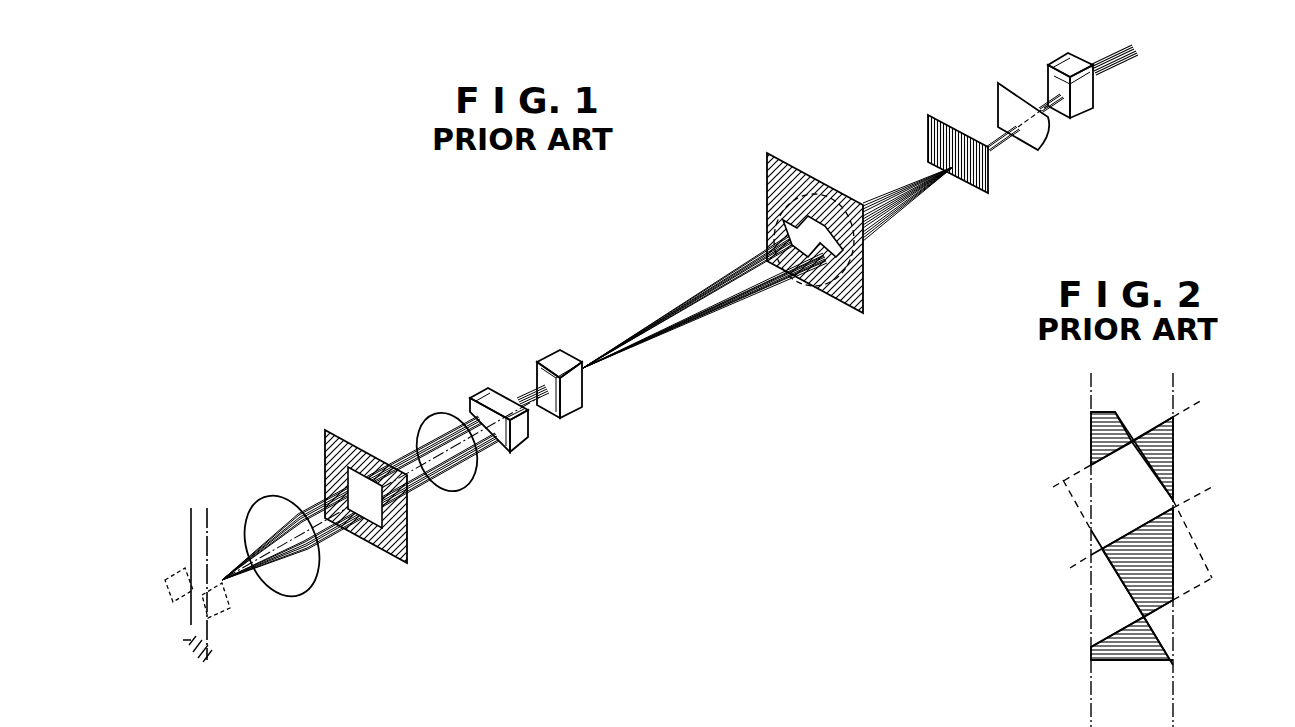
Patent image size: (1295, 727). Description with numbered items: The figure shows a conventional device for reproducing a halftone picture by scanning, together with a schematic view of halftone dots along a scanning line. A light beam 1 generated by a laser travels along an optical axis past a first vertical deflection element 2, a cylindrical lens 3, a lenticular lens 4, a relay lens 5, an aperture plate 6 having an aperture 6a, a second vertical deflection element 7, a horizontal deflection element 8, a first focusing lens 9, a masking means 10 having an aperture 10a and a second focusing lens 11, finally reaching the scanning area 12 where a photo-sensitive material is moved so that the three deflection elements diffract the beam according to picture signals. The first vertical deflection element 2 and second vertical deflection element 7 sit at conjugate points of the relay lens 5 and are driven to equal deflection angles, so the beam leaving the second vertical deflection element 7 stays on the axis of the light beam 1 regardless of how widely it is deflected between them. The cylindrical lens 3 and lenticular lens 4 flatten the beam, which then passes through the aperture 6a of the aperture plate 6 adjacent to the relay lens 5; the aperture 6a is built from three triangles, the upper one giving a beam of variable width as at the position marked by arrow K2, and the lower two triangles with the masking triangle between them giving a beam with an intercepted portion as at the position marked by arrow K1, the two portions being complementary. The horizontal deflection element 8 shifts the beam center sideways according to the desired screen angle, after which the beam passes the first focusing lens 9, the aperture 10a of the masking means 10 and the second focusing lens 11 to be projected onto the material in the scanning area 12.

In FIG. 1, the light beam 1 is at (1110, 62).
In FIG. 1, the first vertical deflection element 2 is at (1088, 113).
In FIG. 1, the cylindrical lens 3 is at (1015, 83).
In FIG. 1, the lenticular lens 4 is at (949, 115).
In FIG. 1, the relay lens 5 is at (832, 292).
In FIG. 1, the aperture plate 6 is at (863, 313).
In FIG. 1, the aperture 6a is at (848, 258).
In FIG. 1, the second vertical deflection element 7 is at (560, 357).
In FIG. 1, the horizontal deflection element 8 is at (507, 400).
In FIG. 1, the first focusing lens 9 is at (467, 488).
In FIG. 1, the masking means 10 is at (407, 560).
In FIG. 1, the aperture 10a is at (383, 512).
In FIG. 1, the second focusing lens 11 is at (306, 594).
In FIG. 1, the scanning area 12 is at (187, 548).
In FIG. 2, the arrow K1 is at (1208, 453).
In FIG. 2, the arrow K2 is at (1204, 643).